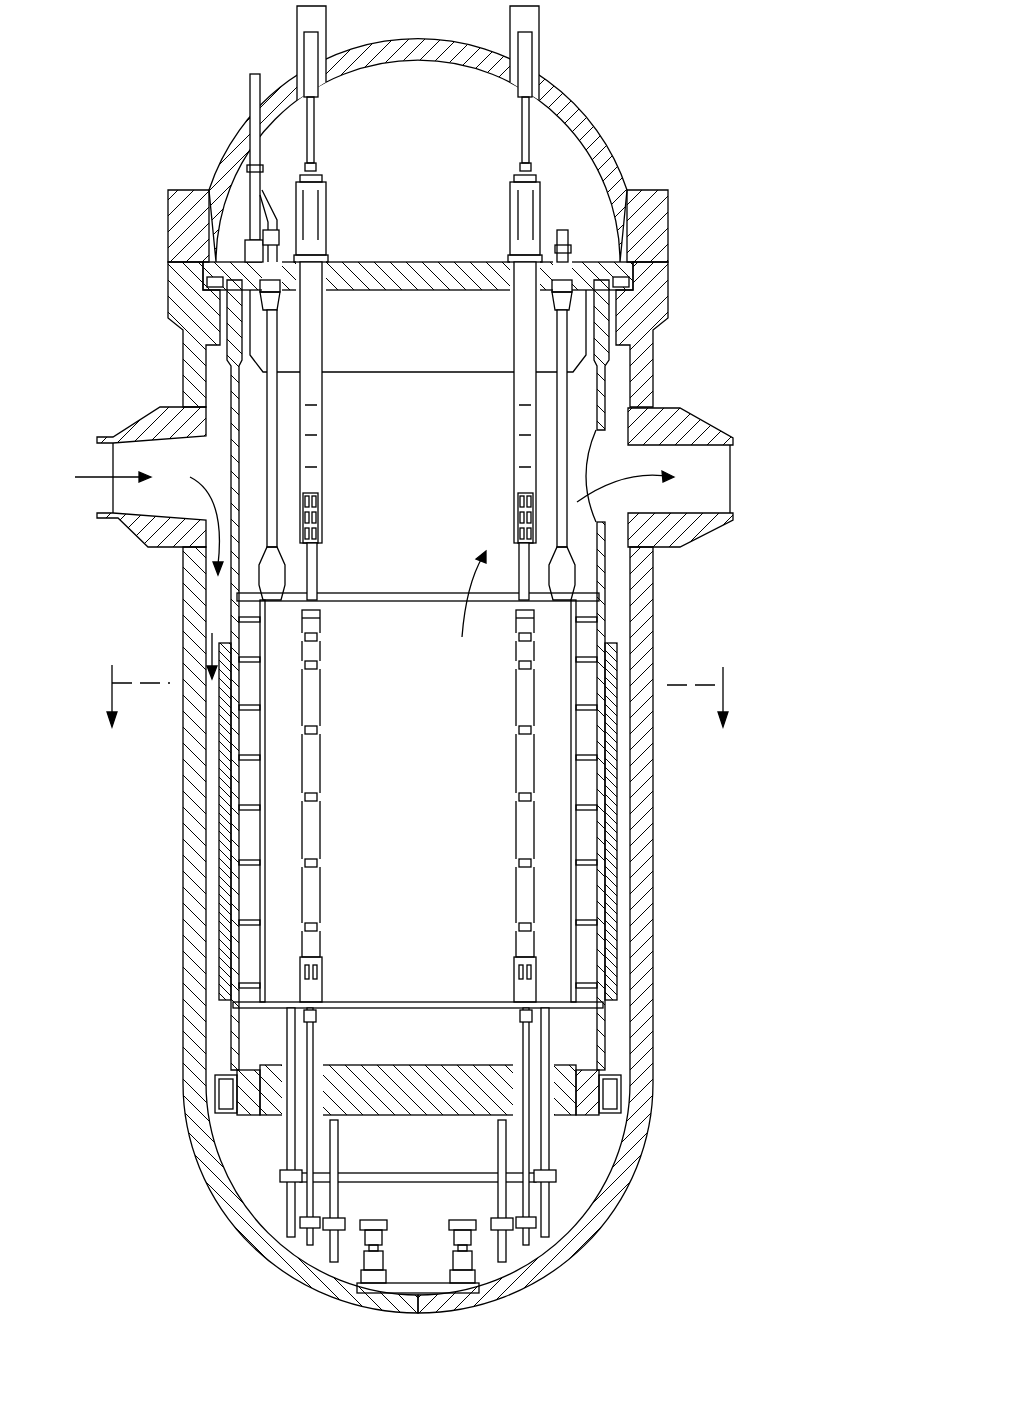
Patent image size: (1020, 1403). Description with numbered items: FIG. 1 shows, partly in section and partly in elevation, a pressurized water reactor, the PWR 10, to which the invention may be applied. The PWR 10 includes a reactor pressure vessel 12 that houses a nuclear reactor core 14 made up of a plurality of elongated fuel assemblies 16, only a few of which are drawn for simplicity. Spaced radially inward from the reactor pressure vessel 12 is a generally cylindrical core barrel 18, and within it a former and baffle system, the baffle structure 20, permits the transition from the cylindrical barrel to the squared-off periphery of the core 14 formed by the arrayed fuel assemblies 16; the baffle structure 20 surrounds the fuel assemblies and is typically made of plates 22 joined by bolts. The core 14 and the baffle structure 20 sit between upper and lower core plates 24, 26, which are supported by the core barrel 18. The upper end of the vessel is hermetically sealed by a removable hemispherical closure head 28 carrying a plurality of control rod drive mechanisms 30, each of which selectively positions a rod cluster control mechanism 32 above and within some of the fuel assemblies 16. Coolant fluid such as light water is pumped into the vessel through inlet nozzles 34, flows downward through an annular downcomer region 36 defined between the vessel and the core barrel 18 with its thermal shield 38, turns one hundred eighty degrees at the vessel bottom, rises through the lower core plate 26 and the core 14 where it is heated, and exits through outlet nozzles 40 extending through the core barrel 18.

The PWR 10 is at (724, 230).
The reactor pressure vessel 12 is at (653, 350).
The nuclear reactor core 14 is at (260, 1025).
The fuel assemblies 16 is at (515, 825).
The core barrel 18 is at (233, 594).
The baffle structure 20 is at (250, 892).
The plates 22 is at (253, 827).
The upper core plate 24 is at (372, 593).
The lower core plate 26 is at (405, 1010).
The closure head 28 is at (590, 118).
The control rod drive mechanisms 30 is at (497, 216).
The rod cluster control mechanism 32 is at (497, 548).
The inlet nozzles 34 is at (143, 413).
The annular downcomer region 36 is at (214, 749).
The thermal shield 38 is at (218, 778).
The outlet nozzles 40 is at (697, 418).